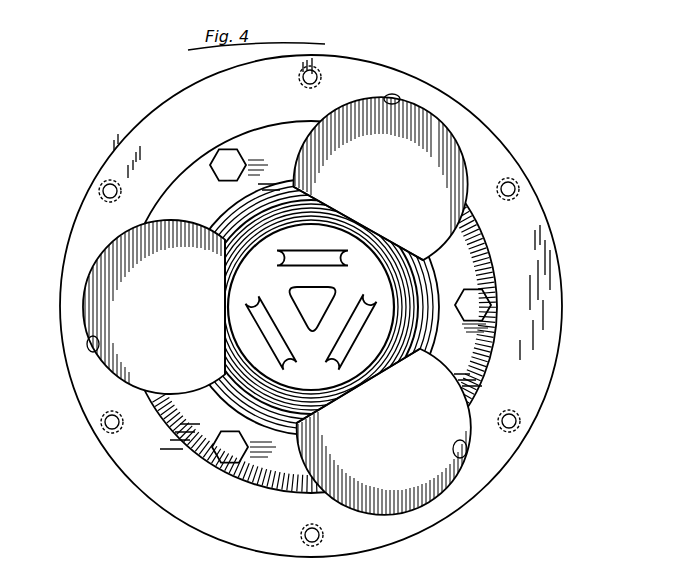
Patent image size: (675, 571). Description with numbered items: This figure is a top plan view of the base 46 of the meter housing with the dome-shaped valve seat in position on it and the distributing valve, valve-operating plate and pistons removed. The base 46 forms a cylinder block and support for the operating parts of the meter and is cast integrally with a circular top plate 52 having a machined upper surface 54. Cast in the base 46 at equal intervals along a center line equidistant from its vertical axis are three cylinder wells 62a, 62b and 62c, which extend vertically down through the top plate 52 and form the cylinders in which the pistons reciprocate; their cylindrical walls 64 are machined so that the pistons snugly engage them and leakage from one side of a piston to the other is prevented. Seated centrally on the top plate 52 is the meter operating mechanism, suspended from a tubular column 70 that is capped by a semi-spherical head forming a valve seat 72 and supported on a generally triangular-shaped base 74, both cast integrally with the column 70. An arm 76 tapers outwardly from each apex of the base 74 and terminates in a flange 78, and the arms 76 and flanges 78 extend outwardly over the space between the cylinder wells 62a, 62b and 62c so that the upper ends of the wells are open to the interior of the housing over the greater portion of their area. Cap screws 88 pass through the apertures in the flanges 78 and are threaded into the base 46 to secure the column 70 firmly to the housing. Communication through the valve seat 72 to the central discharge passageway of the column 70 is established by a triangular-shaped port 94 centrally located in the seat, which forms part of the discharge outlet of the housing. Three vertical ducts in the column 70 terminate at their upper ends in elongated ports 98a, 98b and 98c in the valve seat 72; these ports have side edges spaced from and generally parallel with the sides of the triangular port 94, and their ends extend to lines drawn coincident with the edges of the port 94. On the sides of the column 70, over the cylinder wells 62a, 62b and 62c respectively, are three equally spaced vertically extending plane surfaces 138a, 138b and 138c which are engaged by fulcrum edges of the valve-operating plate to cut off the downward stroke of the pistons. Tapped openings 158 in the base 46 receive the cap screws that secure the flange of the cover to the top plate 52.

The base 46 is at (569, 240).
The top plate 52 is at (492, 142).
The machined upper surface 54 is at (523, 355).
The tapped openings 158 is at (520, 189).
The cap screws 88 is at (228, 158).
The triangular-shaped base 74 is at (268, 178).
The flange 78 is at (294, 138).
The arm 76 is at (232, 212).
The tubular column 70 is at (410, 292).
The valve seat 72 is at (366, 285).
The triangular-shaped port 94 is at (306, 318).
The elongated port 98a is at (252, 342).
The elongated port 98b is at (352, 343).
The elongated port 98c is at (284, 253).
The cylinder well 62a is at (399, 504).
The cylinder well 62b is at (441, 229).
The cylinder well 62c is at (143, 375).
The plane surface 138a is at (356, 394).
The plane surface 138b is at (332, 226).
The plane surface 138c is at (242, 302).
The cylindrical walls 64 is at (399, 96).